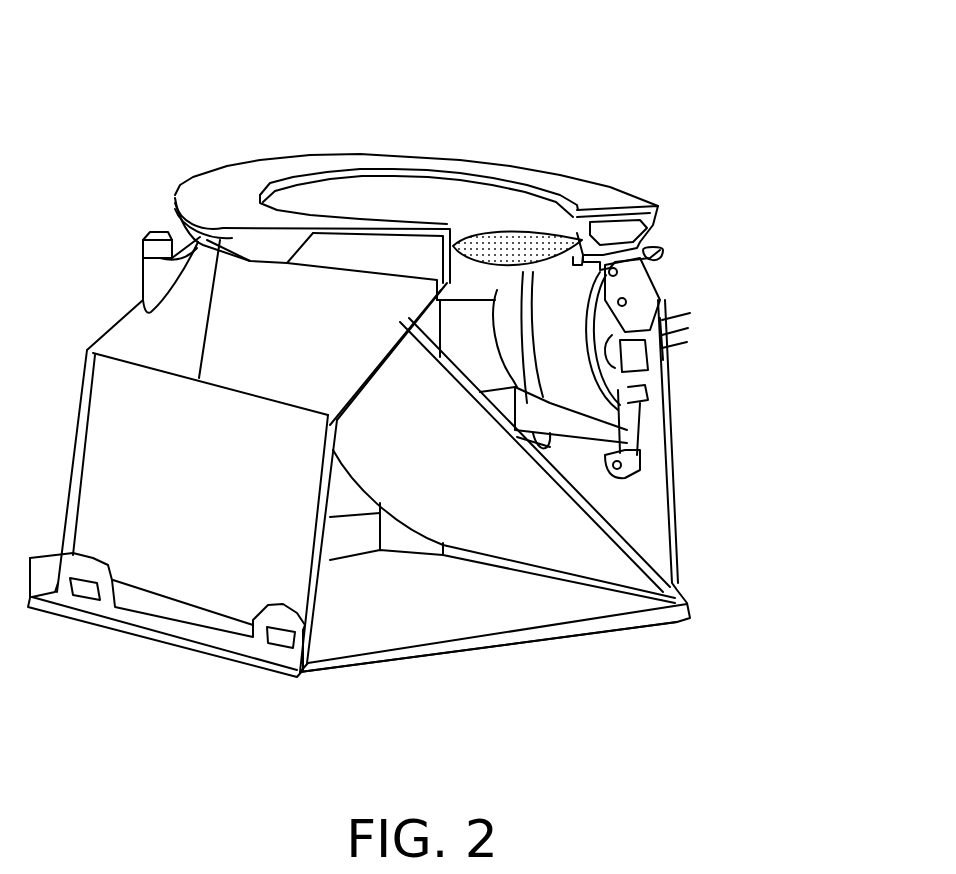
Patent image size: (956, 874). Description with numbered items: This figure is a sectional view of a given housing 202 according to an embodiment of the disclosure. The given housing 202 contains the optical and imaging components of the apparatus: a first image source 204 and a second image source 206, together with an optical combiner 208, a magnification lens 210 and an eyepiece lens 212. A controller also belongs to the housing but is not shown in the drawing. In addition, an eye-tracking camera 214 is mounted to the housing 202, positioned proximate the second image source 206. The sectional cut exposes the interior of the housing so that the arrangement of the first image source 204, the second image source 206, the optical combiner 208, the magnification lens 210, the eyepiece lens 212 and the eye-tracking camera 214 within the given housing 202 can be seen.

The given housing 202 is at (167, 118).
The first image source 204 is at (450, 612).
The second image source 206 is at (585, 407).
The optical combiner 208 is at (538, 535).
The magnification lens 210 is at (585, 427).
The eyepiece lens 212 is at (482, 210).
The eye-tracking camera 214 is at (590, 372).